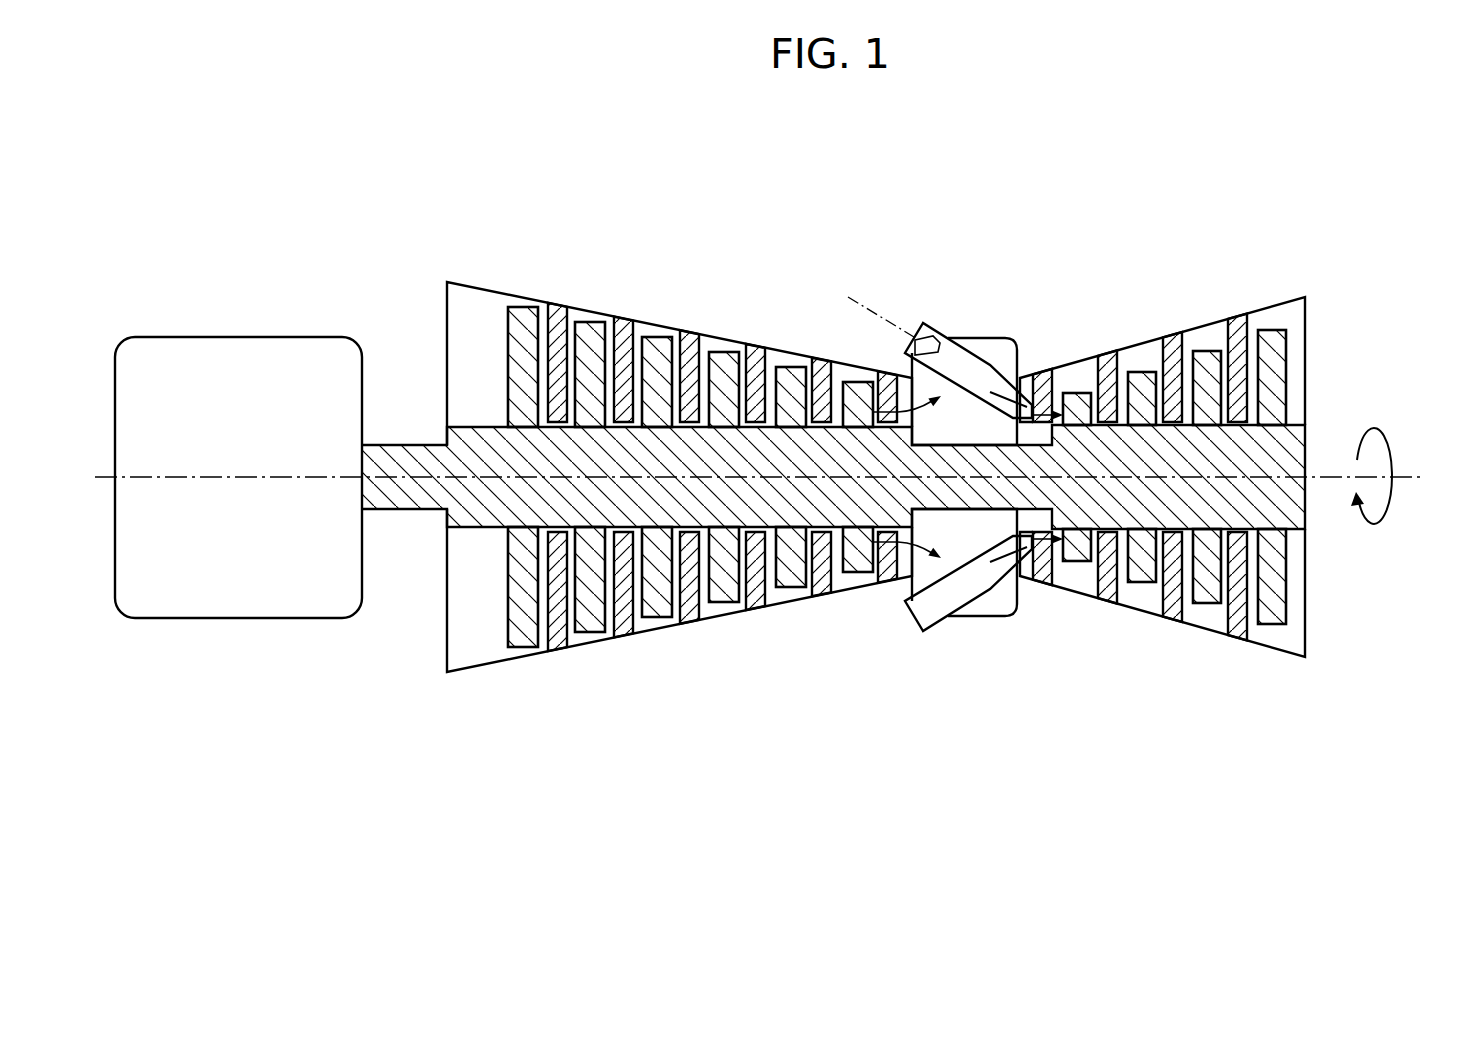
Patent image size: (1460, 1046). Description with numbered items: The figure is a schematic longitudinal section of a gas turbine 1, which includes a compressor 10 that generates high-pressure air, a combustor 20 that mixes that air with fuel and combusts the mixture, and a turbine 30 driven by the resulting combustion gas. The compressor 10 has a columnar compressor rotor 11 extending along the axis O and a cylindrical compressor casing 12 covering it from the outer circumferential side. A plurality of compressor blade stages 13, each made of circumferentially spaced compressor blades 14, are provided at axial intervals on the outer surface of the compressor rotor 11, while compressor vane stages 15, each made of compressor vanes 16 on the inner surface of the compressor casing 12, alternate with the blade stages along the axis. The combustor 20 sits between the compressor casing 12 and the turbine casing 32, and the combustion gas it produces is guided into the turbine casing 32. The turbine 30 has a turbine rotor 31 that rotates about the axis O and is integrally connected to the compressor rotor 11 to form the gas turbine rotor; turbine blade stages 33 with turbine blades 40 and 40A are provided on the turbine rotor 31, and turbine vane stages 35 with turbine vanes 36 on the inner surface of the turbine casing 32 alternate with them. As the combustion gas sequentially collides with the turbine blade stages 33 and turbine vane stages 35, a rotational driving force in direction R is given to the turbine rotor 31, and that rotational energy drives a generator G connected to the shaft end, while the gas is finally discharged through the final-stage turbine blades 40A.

The gas turbine 1 is at (1320, 216).
The compressor 10 is at (611, 283).
The compressor rotor 11 is at (483, 528).
The compressor casing 12 is at (495, 286).
The compressor blade stage 13 is at (681, 533).
The compressor blade 14 is at (517, 645).
The compressor vane stage 15 is at (733, 512).
The compressor vane 16 is at (558, 642).
The combustor 20 is at (970, 356).
The turbine 30 is at (1187, 305).
The turbine rotor 31 is at (1300, 443).
The turbine casing 32 is at (1250, 313).
The turbine blade stage 33 is at (1253, 508).
The turbine vane stage 35 is at (1176, 525).
The turbine vane 36 is at (1107, 599).
The turbine blade 40 is at (1140, 579).
The final-stage turbine blade 40A is at (1278, 607).
The generator G is at (247, 338).
The rotation direction R is at (1390, 444).
The axis O is at (1408, 480).